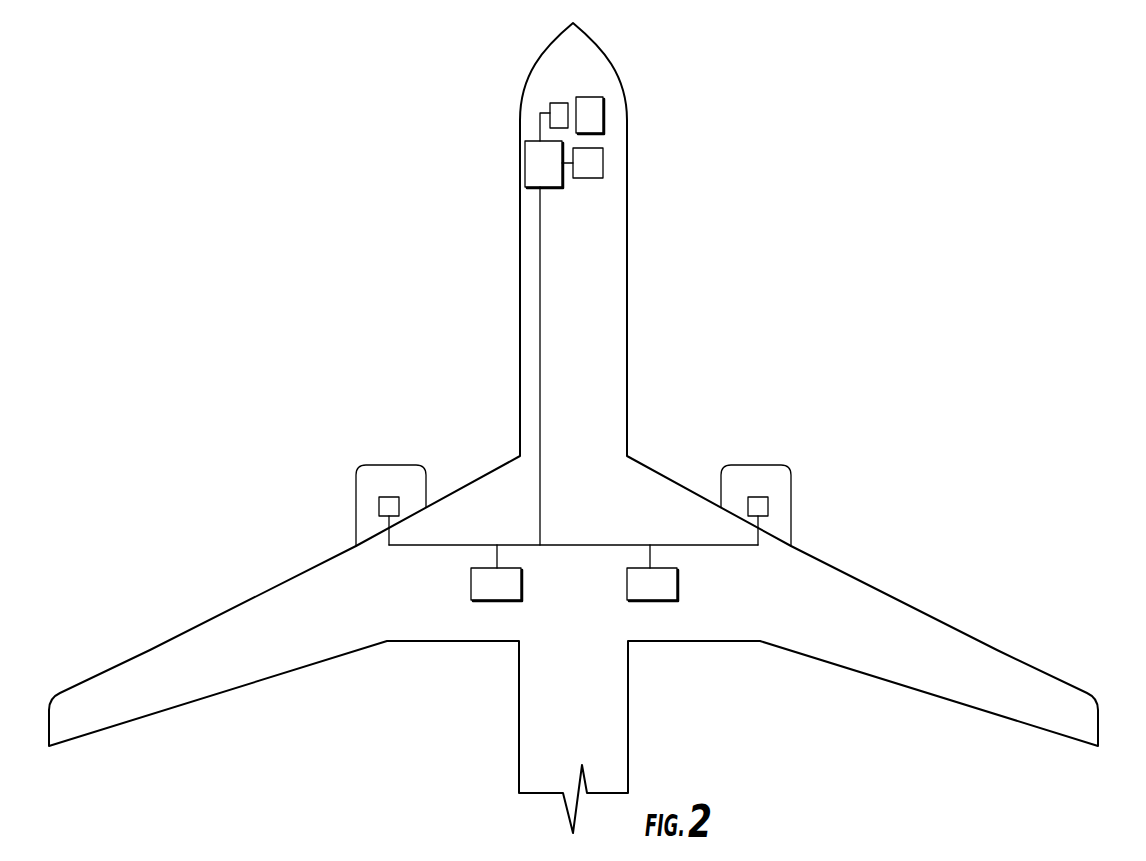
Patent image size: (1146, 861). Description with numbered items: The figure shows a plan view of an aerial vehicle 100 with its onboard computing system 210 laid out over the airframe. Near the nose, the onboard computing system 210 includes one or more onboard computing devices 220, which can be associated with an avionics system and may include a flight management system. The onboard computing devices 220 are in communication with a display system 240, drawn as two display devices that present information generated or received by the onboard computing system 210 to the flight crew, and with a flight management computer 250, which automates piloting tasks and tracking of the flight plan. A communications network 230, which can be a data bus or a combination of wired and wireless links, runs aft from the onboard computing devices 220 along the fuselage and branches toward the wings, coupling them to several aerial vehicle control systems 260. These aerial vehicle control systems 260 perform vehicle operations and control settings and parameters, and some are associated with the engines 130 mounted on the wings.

The aerial vehicle 100 is at (629, 256).
The engine 130 is at (413, 475).
The onboard computing system 210 is at (785, 145).
The onboard computing device 220 is at (525, 161).
The communications network 230 is at (540, 341).
The display system 240 is at (592, 97).
The flight management computer 250 is at (560, 102).
The aerial vehicle control system 260 is at (379, 507).